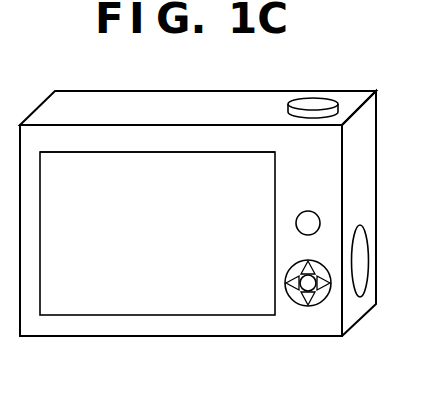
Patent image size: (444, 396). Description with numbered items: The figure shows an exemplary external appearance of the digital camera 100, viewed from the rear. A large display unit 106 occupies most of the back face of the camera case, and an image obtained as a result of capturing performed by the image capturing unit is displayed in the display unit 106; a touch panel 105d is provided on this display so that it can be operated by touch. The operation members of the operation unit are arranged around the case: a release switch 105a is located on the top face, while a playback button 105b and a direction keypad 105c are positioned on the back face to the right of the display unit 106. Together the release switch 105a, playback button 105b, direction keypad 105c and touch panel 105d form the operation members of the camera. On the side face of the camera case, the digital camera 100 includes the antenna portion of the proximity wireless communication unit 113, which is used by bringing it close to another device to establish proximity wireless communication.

The digital camera 100 is at (198, 213).
The display unit 106 is at (209, 152).
The touch panel 105d is at (96, 157).
The release switch 105a is at (309, 97).
The playback button 105b is at (306, 210).
The direction keypad 105c is at (312, 306).
The proximity wireless communication unit 113 is at (366, 231).